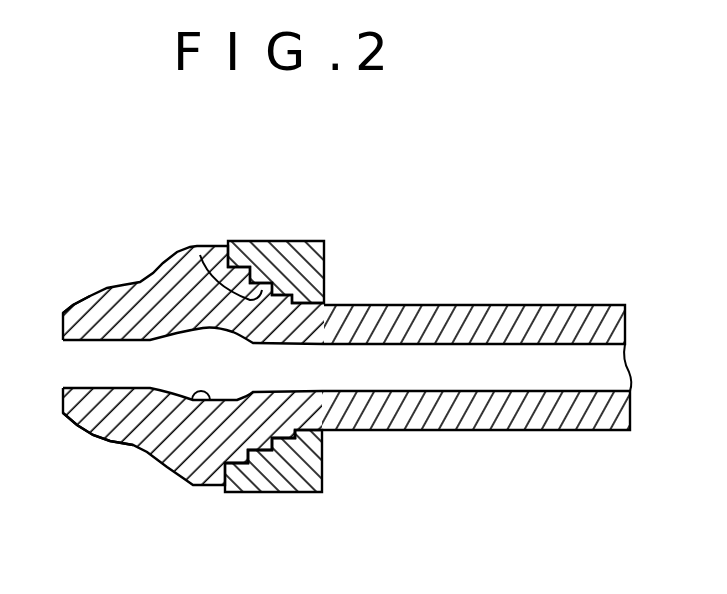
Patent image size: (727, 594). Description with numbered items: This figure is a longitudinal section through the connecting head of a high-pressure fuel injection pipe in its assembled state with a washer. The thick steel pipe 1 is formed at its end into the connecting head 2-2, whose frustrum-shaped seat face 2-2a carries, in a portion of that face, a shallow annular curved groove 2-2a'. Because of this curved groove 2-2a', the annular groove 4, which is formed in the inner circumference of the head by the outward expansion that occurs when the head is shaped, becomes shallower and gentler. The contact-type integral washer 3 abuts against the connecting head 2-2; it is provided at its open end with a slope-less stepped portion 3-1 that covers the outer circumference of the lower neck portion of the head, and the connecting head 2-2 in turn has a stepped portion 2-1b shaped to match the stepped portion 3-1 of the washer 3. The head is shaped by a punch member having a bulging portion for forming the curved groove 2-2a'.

The thick steel pipe 1 is at (503, 315).
The connecting head 2-2 is at (183, 285).
The seat face 2-2a is at (62, 255).
The curved groove 2-2a' is at (91, 475).
The stepped portion 2-1b is at (260, 457).
The washer 3 is at (300, 252).
The stepped portion 3-1 is at (209, 255).
The annular groove 4 is at (210, 401).